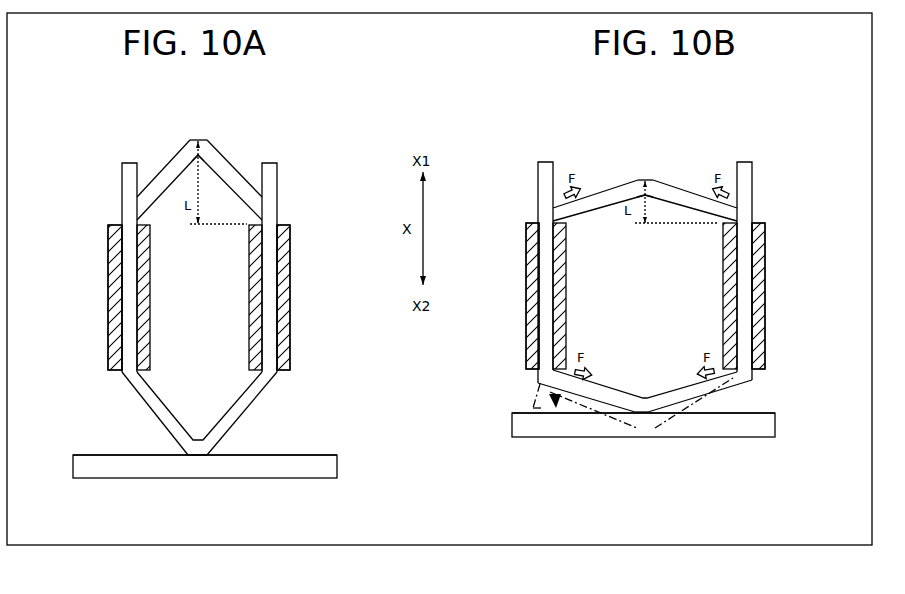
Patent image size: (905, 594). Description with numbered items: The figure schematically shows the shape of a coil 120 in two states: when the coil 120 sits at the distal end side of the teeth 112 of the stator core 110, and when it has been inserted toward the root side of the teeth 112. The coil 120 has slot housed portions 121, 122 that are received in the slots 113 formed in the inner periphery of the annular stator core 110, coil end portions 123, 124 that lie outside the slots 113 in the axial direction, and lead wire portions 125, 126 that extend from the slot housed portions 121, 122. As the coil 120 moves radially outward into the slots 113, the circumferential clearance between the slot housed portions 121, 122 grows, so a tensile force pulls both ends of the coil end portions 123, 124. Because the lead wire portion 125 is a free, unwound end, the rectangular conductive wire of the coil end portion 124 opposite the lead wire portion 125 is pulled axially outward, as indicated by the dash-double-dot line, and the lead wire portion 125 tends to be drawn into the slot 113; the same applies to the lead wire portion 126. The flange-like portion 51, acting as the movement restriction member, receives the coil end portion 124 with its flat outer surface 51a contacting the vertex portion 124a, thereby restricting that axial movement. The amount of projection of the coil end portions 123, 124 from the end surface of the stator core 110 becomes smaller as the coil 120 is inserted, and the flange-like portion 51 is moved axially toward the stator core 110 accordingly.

In FIG. 10A, the stator core 110 is at (294, 342).
In FIG. 10B, the stator core 110 is at (774, 341).
In FIG. 10A, the teeth 112 is at (111, 243).
In FIG. 10B, the teeth 112 is at (527, 242).
In FIG. 10A, the slot 113 is at (122, 277).
In FIG. 10B, the slot 113 is at (542, 288).
In FIG. 10A, the coil 120 is at (160, 141).
In FIG. 10B, the coil 120 is at (590, 160).
In FIG. 10A, the slot housed portion 121 is at (128, 312).
In FIG. 10B, the slot housed portion 121 is at (547, 313).
In FIG. 10A, the slot housed portion 122 is at (268, 296).
In FIG. 10B, the slot housed portion 122 is at (745, 305).
In FIG. 10A, the coil end portion 123 is at (232, 152).
In FIG. 10B, the coil end portion 123 is at (690, 170).
In FIG. 10A, the coil end portion 124 is at (255, 421).
In FIG. 10B, the coil end portion 124 is at (747, 385).
In FIG. 10A, the vertex portion 124a is at (200, 460).
In FIG. 10B, the vertex portion 124a is at (647, 413).
In FIG. 10A, the lead wire portion 125 is at (128, 175).
In FIG. 10B, the lead wire portion 125 is at (547, 175).
In FIG. 10A, the lead wire portion 126 is at (279, 173).
In FIG. 10B, the lead wire portion 126 is at (745, 175).
In FIG. 10A, the flange-like portion 51 is at (132, 472).
In FIG. 10B, the flange-like portion 51 is at (557, 425).
In FIG. 10A, the outer surface 51a is at (90, 455).
In FIG. 10B, the outer surface 51a is at (535, 410).